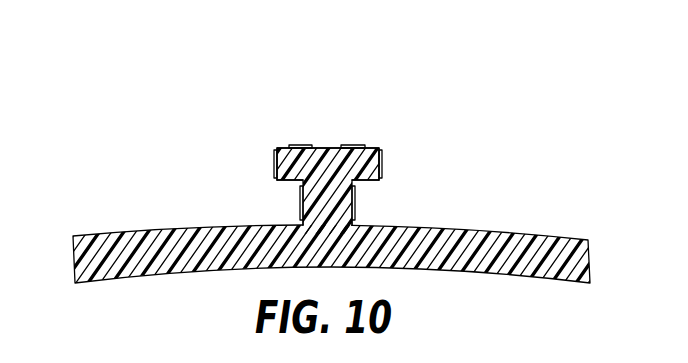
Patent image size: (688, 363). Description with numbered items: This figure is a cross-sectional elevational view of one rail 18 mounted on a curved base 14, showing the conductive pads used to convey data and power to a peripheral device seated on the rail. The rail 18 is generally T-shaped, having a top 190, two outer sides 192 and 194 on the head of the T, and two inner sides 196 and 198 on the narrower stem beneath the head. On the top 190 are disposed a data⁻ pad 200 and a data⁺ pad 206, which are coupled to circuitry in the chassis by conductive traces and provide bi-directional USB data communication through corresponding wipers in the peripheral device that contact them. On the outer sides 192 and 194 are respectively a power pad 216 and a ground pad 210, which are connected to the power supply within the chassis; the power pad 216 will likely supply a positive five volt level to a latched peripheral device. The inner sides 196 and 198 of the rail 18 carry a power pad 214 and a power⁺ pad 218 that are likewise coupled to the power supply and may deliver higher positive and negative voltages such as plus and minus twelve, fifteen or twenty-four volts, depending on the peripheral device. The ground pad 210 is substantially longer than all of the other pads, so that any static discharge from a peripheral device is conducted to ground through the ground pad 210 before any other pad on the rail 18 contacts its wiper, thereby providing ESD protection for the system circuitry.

The wheel rim / base body 14 is at (552, 238).
The rail 18 is at (434, 103).
The top 190 is at (281, 147).
The data⁺ pad 206 is at (300, 145).
The data⁻ pad 200 is at (358, 145).
The ground pad 210 is at (274, 158).
The power pad 216 is at (382, 158).
The outer side 194 is at (277, 181).
The outer side 192 is at (379, 182).
The power pad 214 is at (302, 198).
The power⁺ pad 218 is at (355, 196).
The inner side 198 is at (302, 220).
The inner side 196 is at (357, 218).